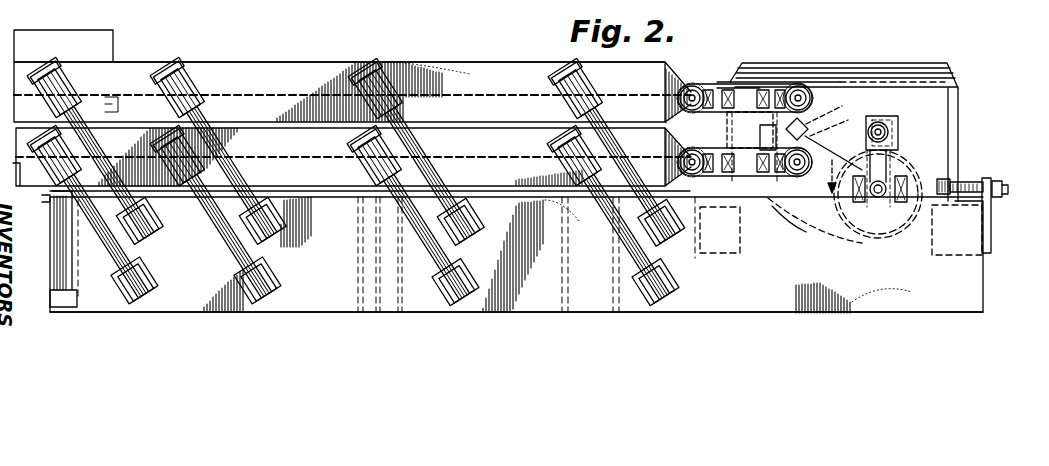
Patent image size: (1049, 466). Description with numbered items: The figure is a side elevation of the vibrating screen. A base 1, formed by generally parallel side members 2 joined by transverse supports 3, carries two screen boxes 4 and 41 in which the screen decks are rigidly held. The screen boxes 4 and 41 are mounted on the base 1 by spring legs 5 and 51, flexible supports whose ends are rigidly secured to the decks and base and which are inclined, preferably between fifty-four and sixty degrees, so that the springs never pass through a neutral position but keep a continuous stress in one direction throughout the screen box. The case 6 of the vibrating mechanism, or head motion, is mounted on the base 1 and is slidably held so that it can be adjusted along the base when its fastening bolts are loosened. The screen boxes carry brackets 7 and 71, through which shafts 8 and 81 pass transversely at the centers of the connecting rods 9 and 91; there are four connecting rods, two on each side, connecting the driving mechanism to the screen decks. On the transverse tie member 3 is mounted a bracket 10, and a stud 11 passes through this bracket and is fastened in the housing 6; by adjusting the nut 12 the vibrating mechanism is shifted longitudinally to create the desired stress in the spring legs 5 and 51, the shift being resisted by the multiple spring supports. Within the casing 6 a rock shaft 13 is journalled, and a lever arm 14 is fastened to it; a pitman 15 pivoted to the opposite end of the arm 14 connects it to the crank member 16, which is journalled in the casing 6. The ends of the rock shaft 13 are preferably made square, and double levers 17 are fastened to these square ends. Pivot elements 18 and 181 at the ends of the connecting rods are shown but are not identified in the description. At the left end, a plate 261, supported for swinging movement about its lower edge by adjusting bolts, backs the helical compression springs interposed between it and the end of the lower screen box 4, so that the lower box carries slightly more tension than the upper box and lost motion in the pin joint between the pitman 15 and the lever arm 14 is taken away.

The base 1 is at (956, 314).
The side members 2 is at (766, 314).
The transverse supports 3 is at (400, 298).
The screen box 4 is at (318, 342).
The screen box 41 is at (246, 75).
The spring legs 5 is at (222, 250).
The spring legs 51 is at (89, 148).
The case of the vibrating mechanism 6 is at (947, 160).
The bracket 7 is at (681, 186).
The bracket 71 is at (700, 82).
The shaft 8 is at (709, 111).
The shaft 81 is at (703, 88).
The connecting rods 9 is at (758, 177).
The connecting rods 91 is at (745, 87).
The bracket 10 is at (991, 222).
The stud 11 is at (982, 183).
The nut 12 is at (1003, 186).
The rock shaft 13 is at (808, 122).
The lever arm 14 is at (832, 169).
The pitman 15 is at (905, 148).
The crank member 16 is at (887, 199).
The double levers 17 is at (830, 118).
The pivot 18 is at (797, 177).
The bearing 181 is at (801, 84).
The plate 261 is at (60, 248).